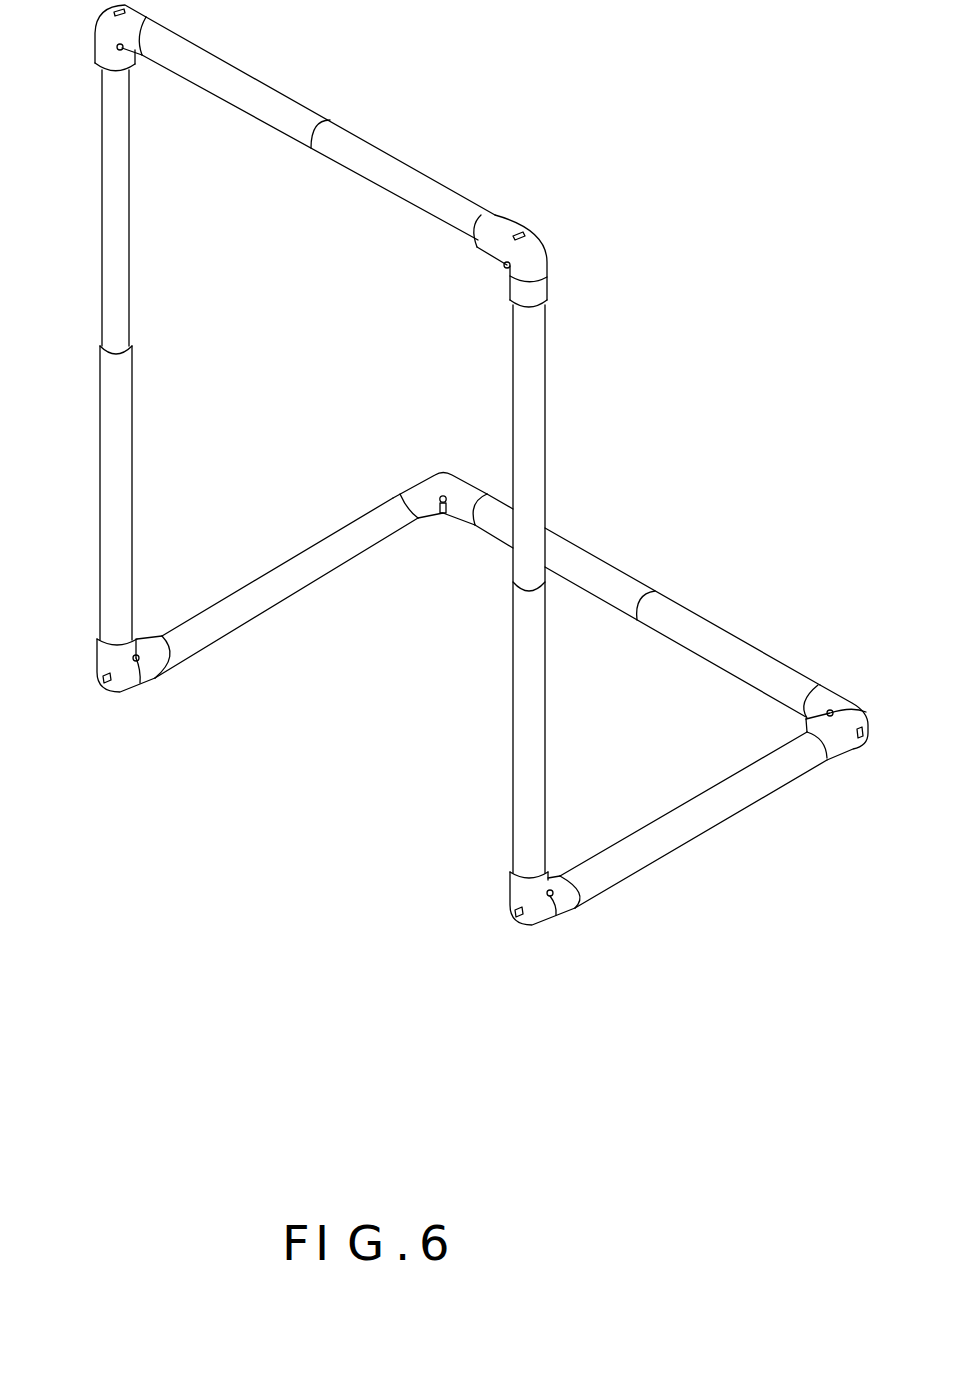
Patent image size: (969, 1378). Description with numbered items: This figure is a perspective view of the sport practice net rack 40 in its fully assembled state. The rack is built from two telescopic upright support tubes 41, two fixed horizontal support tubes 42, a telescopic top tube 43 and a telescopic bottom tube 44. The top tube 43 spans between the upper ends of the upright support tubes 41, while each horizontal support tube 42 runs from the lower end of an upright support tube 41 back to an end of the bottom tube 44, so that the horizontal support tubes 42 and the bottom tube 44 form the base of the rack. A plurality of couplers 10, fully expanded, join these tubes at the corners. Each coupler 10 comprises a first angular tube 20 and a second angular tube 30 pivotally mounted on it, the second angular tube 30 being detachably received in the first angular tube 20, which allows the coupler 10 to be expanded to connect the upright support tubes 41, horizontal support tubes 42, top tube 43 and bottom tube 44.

The coupler 10 is at (105, 693).
The first angular tube 20 is at (97, 648).
The second angular tube 30 is at (153, 678).
The sport practice net rack 40 is at (576, 381).
The telescopic upright support tube 41 is at (125, 426).
The fixed horizontal support tube 42 is at (328, 546).
The telescopic top tube 43 is at (356, 147).
The telescopic bottom tube 44 is at (708, 637).